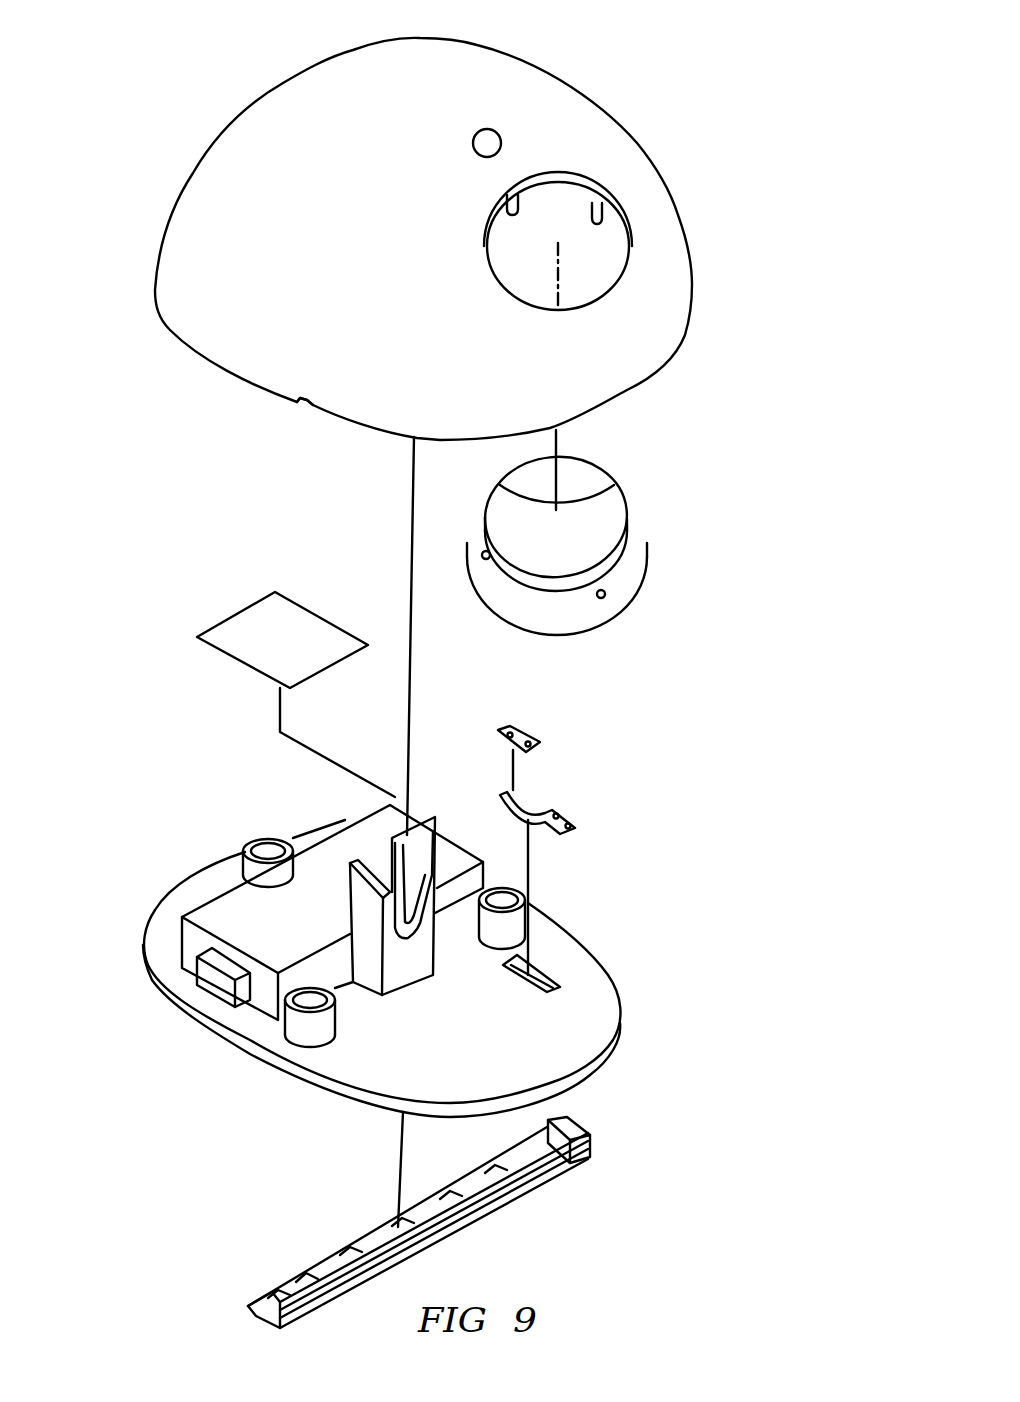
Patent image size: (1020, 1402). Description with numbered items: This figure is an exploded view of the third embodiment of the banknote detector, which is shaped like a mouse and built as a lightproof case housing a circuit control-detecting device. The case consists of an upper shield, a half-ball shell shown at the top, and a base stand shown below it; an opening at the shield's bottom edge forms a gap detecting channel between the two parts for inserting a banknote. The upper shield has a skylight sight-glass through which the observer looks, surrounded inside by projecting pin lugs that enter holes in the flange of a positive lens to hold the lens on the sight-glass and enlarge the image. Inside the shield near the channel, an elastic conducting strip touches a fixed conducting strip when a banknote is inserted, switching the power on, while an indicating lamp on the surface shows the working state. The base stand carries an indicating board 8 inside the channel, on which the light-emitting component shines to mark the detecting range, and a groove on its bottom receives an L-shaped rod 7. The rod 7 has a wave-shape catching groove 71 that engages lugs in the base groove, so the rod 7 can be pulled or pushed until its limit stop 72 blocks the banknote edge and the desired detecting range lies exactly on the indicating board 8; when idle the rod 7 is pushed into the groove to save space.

The indicating board 8 is at (257, 648).
The L-shaped rod 7 is at (450, 1207).
The wave-shape catching groove 71 is at (307, 1275).
The limit stop 72 is at (590, 1152).